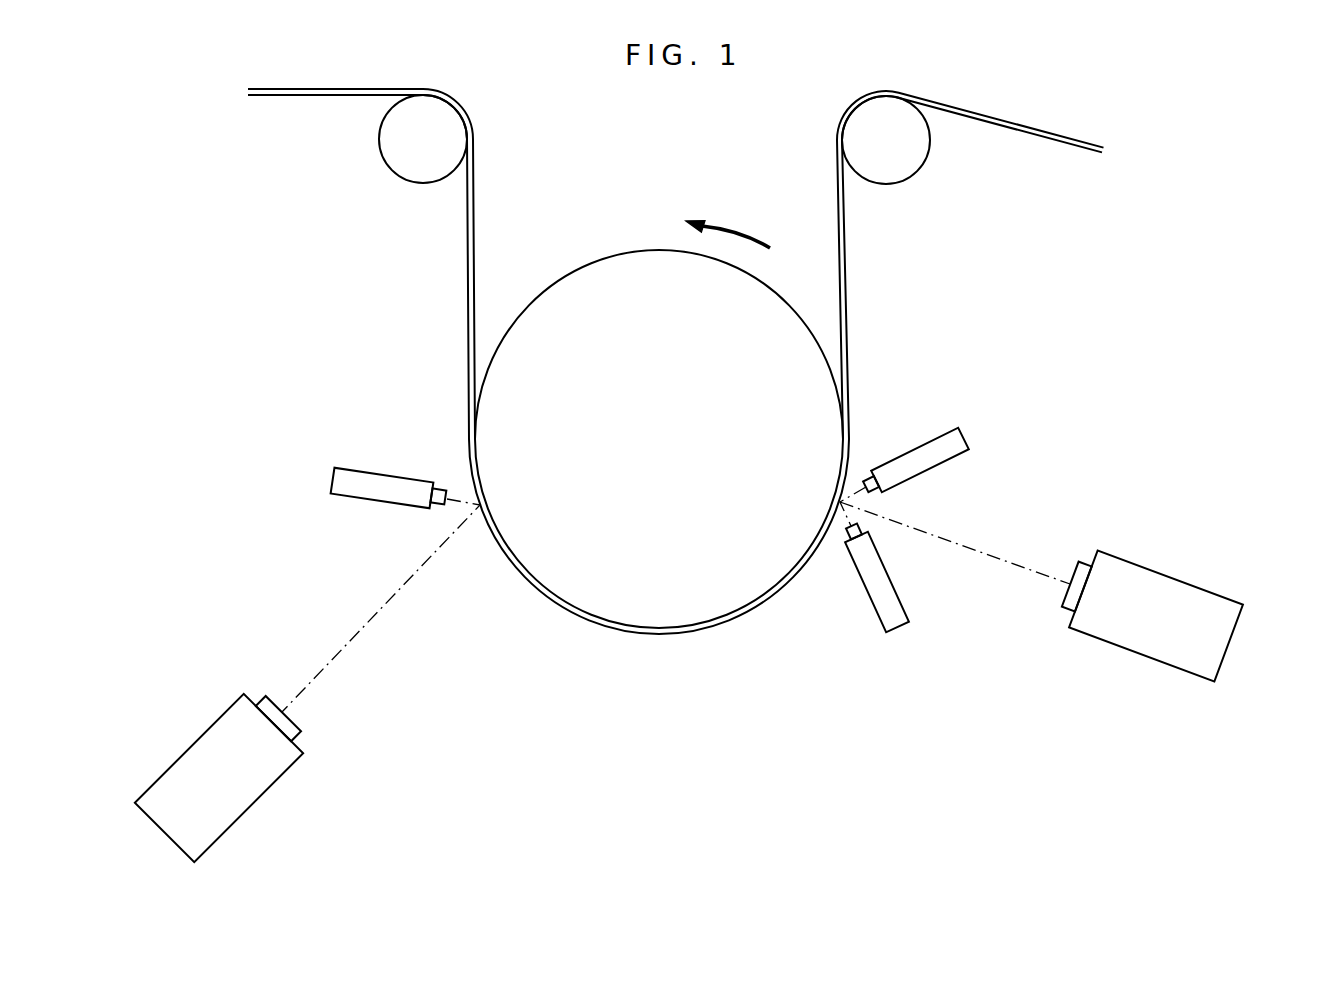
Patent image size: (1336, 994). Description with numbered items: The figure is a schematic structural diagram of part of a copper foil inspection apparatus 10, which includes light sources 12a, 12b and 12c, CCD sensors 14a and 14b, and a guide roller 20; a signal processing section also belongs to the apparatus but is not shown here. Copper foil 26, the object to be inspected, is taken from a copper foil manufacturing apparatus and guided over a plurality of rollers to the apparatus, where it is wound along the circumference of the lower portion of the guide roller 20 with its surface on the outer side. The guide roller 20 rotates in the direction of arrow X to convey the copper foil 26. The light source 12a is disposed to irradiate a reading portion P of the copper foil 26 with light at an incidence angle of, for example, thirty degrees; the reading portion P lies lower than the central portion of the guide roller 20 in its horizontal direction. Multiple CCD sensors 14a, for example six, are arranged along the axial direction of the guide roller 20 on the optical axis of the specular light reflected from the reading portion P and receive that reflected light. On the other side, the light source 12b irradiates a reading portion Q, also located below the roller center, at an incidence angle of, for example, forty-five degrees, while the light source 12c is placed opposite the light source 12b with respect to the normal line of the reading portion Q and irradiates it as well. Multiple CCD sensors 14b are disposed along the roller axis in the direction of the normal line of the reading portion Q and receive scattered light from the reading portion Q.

The copper foil inspection apparatus 10 is at (1228, 193).
The guide roller 20 is at (648, 250).
The copper foil 26 is at (475, 268).
The light source 12a is at (340, 467).
The light source 12b is at (877, 617).
The light source 12c is at (945, 440).
The CCD sensors 14a is at (293, 762).
The CCD sensors 14b is at (1098, 633).
The reading portion P is at (479, 512).
The reading portion Q is at (841, 513).
The arrow X is at (739, 247).